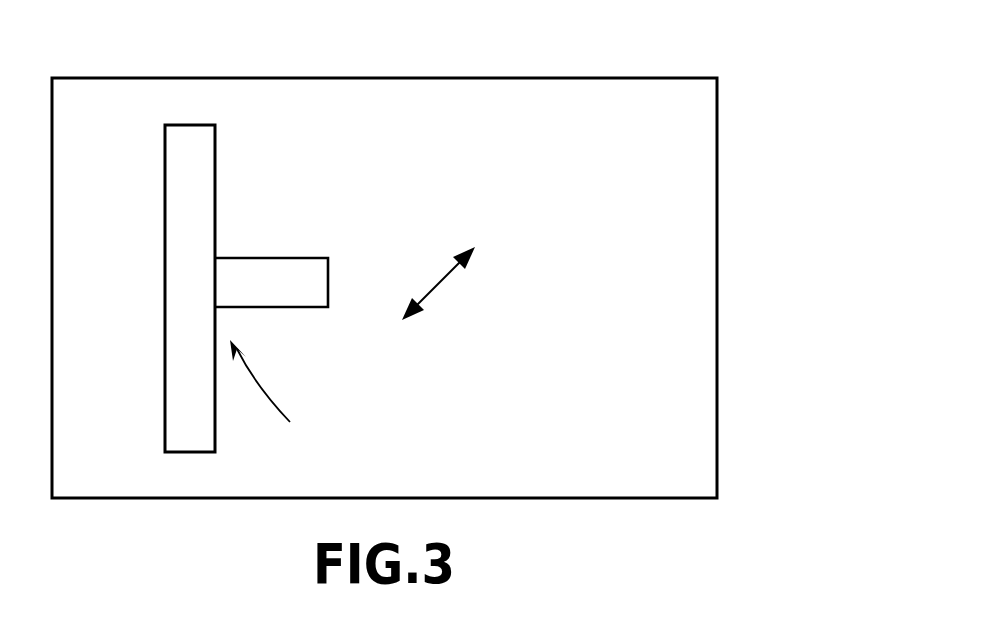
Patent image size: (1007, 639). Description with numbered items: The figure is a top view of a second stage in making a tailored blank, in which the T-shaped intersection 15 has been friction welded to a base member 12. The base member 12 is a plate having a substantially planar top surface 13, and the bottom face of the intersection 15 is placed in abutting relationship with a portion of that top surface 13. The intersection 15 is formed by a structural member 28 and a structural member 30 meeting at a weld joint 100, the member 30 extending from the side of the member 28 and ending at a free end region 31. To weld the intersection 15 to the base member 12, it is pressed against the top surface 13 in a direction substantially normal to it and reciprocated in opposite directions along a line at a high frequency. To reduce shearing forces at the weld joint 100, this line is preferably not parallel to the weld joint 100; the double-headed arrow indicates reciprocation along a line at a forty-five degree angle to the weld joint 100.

The base member 12 is at (653, 78).
The top surface 13 is at (668, 350).
The T-shaped intersection 15 is at (281, 393).
The structural member 28 is at (215, 170).
The structural member 30 is at (300, 258).
The conductor line segment 31 is at (265, 293).
The weld joint 100 is at (212, 282).